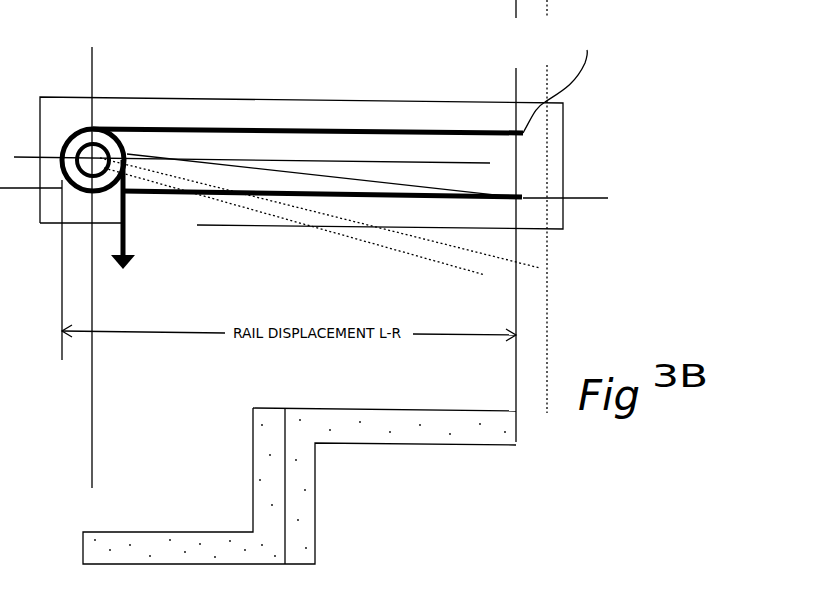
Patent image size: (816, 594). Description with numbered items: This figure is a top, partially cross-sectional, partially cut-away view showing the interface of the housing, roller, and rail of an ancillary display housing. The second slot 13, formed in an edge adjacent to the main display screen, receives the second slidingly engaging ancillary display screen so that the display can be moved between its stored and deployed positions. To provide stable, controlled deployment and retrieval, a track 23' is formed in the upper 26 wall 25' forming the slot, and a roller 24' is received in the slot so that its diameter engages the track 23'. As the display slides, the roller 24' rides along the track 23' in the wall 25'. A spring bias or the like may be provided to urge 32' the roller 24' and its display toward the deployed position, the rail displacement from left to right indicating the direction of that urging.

The roller 24' is at (83, 151).
The second slot 13 is at (275, 240).
The track 23' is at (308, 217).
The wall 25' is at (322, 250).
The upper wall 26 is at (592, 133).
The urging 32' is at (299, 465).